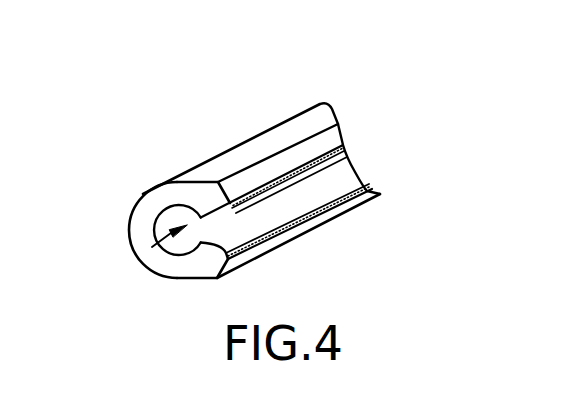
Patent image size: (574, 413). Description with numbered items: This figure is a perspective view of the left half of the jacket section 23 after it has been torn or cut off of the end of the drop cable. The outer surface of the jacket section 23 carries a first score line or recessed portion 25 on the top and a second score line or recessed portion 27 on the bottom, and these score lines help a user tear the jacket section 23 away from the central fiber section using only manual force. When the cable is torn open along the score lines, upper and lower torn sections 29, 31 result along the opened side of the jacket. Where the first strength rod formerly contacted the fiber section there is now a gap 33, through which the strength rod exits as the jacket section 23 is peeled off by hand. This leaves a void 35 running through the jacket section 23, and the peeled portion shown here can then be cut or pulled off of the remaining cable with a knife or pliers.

The jacket section 23 is at (158, 197).
The first score line or recessed portion 25 is at (338, 126).
The second score line or recessed portion 27 is at (278, 247).
The upper torn section 29 is at (342, 146).
The lower torn section 31 is at (367, 191).
The gap 33 is at (346, 152).
The void 35 is at (152, 247).